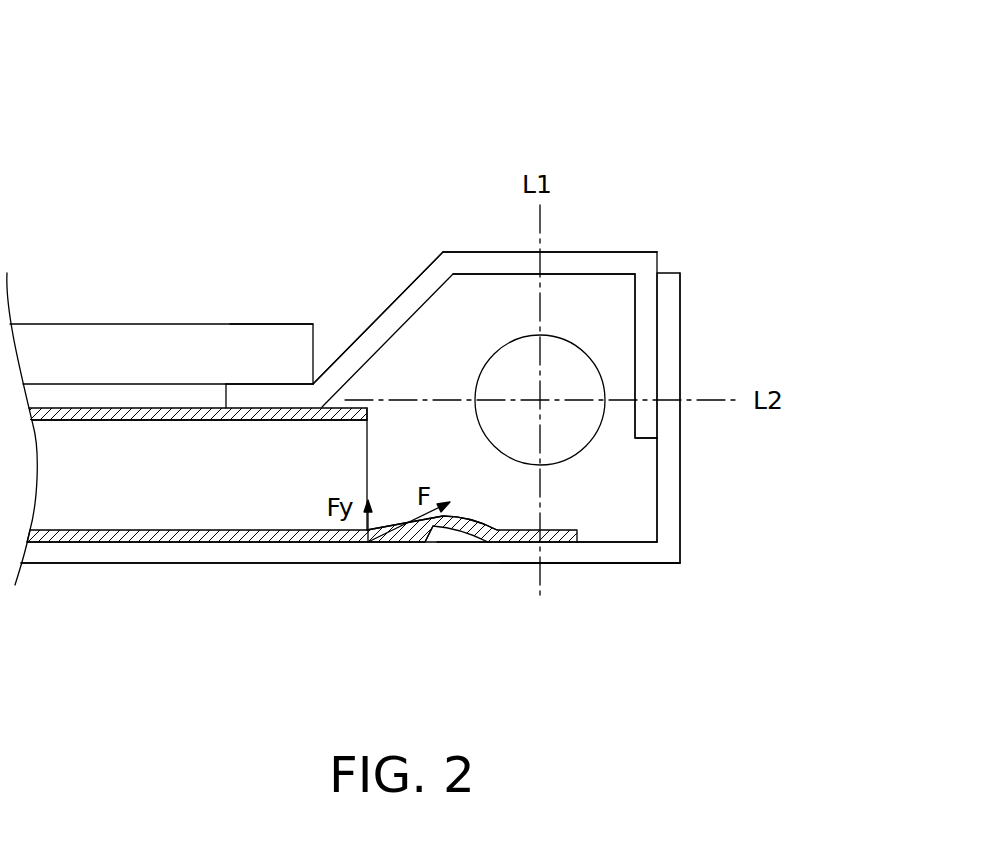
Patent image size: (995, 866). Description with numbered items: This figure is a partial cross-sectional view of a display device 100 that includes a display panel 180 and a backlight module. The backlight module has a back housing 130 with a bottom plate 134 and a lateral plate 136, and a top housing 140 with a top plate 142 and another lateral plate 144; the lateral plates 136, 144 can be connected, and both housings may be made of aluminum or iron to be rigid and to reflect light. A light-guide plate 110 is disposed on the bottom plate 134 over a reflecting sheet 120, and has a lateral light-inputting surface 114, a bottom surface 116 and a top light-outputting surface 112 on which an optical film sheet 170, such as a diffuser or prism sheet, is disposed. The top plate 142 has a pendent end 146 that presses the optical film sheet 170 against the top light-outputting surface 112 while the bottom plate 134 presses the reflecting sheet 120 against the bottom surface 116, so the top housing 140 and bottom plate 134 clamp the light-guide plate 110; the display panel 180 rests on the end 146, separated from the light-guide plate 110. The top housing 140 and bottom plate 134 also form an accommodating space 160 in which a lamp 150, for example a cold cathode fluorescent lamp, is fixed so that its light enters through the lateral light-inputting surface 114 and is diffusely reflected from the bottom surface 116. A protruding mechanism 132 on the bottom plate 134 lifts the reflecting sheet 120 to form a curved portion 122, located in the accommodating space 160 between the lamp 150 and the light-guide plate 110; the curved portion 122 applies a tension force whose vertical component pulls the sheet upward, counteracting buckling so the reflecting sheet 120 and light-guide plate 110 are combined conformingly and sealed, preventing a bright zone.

The display device 100 is at (69, 42).
The light-guide plate 110 is at (133, 430).
The top light-outputting surface 112 is at (192, 417).
The lateral light-inputting surface 114 is at (367, 441).
The bottom surface 116 is at (210, 530).
The reflecting sheet 120 is at (113, 535).
The curved portion 122 is at (467, 527).
The back housing 130 is at (598, 563).
The protruding mechanism 132 is at (433, 527).
The bottom plate 134 is at (512, 557).
The lateral plate 136 is at (671, 503).
The top housing 140 is at (598, 252).
The top plate 142 is at (462, 262).
The lateral plate 144 is at (648, 340).
The end 146 is at (263, 388).
The lamp 150 is at (502, 345).
The accommodating space 160 is at (445, 317).
The optical film sheet 170 is at (33, 430).
The display panel 180 is at (302, 327).